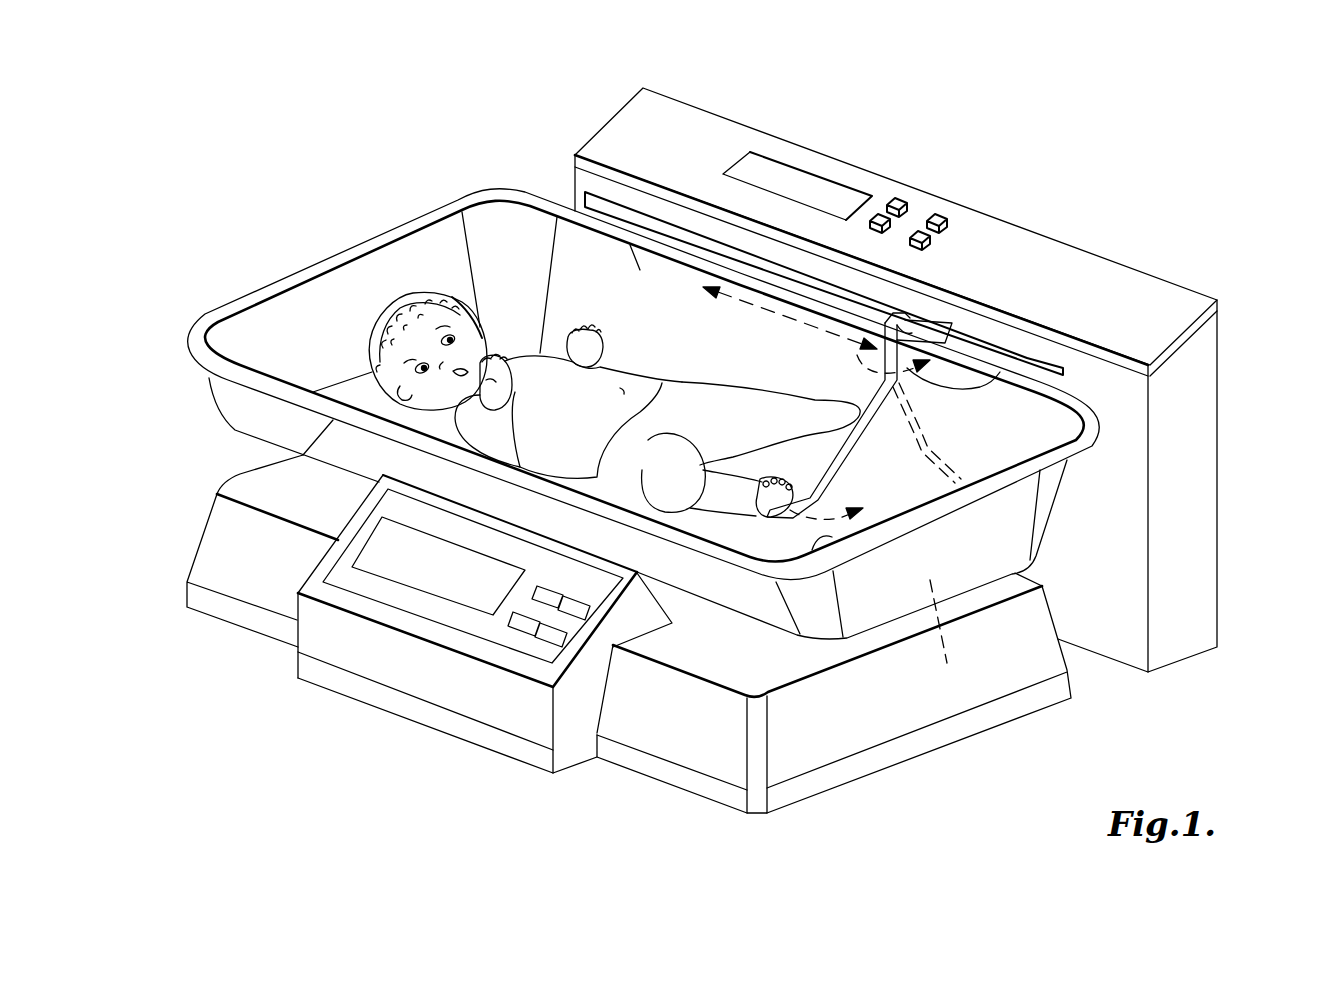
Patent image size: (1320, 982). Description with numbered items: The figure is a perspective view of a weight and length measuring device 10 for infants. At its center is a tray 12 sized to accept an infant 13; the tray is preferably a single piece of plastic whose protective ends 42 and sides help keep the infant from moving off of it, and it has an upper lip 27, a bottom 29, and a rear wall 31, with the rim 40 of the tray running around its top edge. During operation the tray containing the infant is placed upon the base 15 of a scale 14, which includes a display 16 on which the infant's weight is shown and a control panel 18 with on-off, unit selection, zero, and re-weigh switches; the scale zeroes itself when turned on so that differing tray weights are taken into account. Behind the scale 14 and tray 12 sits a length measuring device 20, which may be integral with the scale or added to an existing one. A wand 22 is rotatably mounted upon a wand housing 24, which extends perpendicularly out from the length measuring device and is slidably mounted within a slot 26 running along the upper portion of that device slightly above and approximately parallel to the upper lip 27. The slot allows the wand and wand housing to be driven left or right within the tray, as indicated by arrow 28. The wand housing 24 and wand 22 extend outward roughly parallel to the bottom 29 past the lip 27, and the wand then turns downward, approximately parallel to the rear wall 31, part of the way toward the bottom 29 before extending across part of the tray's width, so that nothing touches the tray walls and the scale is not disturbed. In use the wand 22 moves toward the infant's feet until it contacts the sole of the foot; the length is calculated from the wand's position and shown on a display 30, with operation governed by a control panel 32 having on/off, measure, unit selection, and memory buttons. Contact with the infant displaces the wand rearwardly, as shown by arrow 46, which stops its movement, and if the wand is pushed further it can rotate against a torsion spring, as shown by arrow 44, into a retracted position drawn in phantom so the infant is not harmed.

The weight and length measuring device 10 is at (335, 148).
The tray 12 is at (245, 410).
The infant 13 is at (427, 240).
The scale 14 is at (228, 549).
The base 15 is at (255, 487).
The display 16 is at (405, 577).
The control panel 18 is at (508, 648).
The length measuring device 20 is at (1252, 338).
The wand 22 is at (787, 513).
The wand housing 24 is at (930, 320).
The slot 26 is at (607, 205).
The upper lip 27 is at (515, 195).
The arrow 28 is at (773, 313).
The bottom 29 is at (812, 550).
The display 30 is at (803, 183).
The rear wall 31 is at (640, 268).
The control panel 32 is at (917, 183).
The rim bumper 40 is at (303, 298).
The protective end 42 is at (1033, 518).
The arrow 44 is at (1000, 372).
The arrow 46 is at (947, 665).